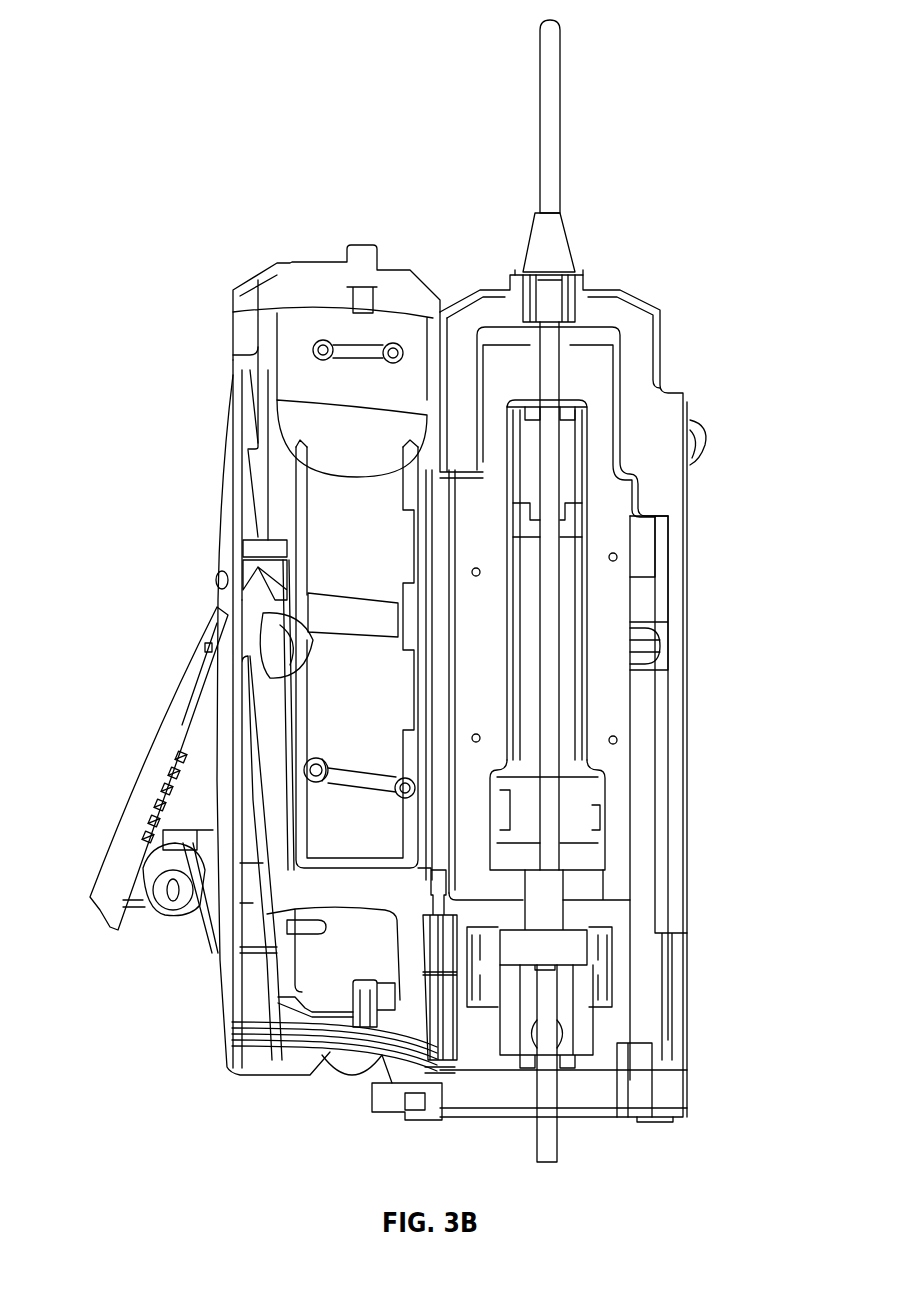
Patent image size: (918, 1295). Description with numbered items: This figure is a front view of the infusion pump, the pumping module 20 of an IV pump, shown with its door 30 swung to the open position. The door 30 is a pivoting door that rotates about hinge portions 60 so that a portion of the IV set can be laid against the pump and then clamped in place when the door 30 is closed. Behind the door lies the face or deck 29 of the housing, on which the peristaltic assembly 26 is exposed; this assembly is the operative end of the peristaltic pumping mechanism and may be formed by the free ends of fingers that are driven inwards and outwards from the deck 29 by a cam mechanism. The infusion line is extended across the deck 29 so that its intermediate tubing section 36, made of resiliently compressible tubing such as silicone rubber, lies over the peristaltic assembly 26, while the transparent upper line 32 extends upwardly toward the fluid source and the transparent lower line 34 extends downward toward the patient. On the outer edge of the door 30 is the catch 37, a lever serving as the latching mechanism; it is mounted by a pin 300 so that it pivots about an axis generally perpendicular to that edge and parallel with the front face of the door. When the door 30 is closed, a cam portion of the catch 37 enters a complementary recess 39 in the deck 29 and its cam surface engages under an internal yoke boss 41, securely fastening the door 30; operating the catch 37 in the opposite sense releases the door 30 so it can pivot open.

The pumping module 20 is at (722, 70).
The peristaltic assembly 26 is at (558, 688).
The deck 29 is at (623, 497).
The door 30 is at (240, 296).
The upper line 32 is at (553, 85).
The lower line 34 is at (553, 1143).
The tubing section 36 is at (548, 610).
The catch 37 is at (103, 915).
The recess 39 is at (665, 663).
The yoke boss 41 is at (650, 648).
The hinge portions 60 is at (435, 415).
The pin 300 is at (216, 583).